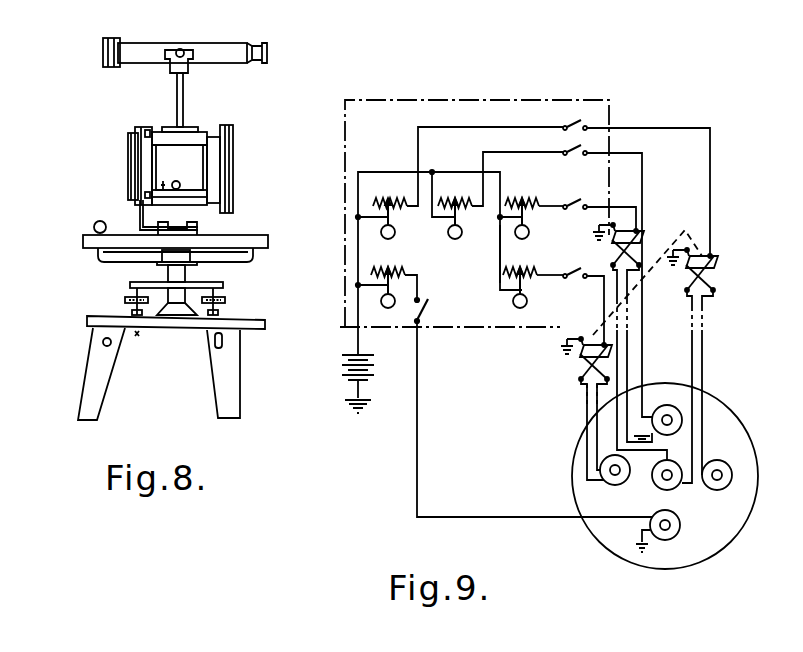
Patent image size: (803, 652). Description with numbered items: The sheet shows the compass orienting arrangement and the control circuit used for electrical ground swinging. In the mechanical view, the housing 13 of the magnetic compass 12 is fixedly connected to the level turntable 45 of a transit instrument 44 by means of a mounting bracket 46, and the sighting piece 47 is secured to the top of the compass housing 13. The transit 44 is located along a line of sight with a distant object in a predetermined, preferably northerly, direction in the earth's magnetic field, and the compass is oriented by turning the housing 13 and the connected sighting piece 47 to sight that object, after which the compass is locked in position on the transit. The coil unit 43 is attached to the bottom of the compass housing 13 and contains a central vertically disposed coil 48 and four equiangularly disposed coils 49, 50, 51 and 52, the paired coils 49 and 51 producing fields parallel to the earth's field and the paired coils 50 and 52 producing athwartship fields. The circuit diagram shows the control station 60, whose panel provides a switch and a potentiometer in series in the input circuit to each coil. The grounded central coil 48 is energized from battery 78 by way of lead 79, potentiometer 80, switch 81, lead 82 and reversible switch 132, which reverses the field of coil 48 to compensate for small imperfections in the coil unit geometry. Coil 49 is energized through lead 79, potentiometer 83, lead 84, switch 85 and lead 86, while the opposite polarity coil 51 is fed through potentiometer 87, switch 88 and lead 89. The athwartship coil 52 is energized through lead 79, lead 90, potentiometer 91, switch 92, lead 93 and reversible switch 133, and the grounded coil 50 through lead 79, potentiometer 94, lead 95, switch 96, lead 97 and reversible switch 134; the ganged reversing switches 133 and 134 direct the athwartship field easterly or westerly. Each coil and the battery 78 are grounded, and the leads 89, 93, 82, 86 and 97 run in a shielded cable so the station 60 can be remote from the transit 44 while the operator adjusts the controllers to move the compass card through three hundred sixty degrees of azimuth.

In FIG. 8, the magnetic compass 12 is at (122, 170).
In FIG. 8, the compass instrument housing 13 is at (186, 140).
In FIG. 8, the coil unit 43 is at (196, 203).
In FIG. 9, the coil unit 43 is at (622, 561).
In FIG. 8, the transit instrument 44 is at (82, 356).
In FIG. 8, the level turntable 45 is at (252, 235).
In FIG. 8, the mounting bracket 46 is at (136, 218).
In FIG. 8, the sighting piece 47 is at (149, 49).
In FIG. 9, the central coil 48 is at (673, 488).
In FIG. 9, the north-south directed coil 49 is at (667, 404).
In FIG. 9, the grounded coil 50 is at (712, 458).
In FIG. 9, the opposite polarity coil 51 is at (675, 535).
In FIG. 9, the athwartship located coil 52 is at (615, 485).
In FIG. 9, the control station 60 is at (472, 100).
In FIG. 9, the battery 78 is at (331, 384).
In FIG. 9, the lead 79 is at (362, 164).
In FIG. 9, the potentiometer 80 is at (525, 195).
In FIG. 9, the switch 81 is at (582, 202).
In FIG. 9, the lead 82 is at (618, 208).
In FIG. 9, the potentiometer 83 is at (458, 189).
In FIG. 9, the lead 84 is at (519, 153).
In FIG. 9, the switch 85 is at (580, 152).
In FIG. 9, the lead 86 is at (649, 198).
In FIG. 9, the potentiometer 87 is at (392, 263).
In FIG. 9, the switch 88 is at (428, 312).
In FIG. 9, the lead 89 is at (417, 410).
In FIG. 9, the lead 90 is at (500, 253).
In FIG. 9, the potentiometer 91 is at (518, 268).
In FIG. 9, the switch 92 is at (573, 267).
In FIG. 9, the lead 93 is at (607, 297).
In FIG. 9, the potentiometer 94 is at (386, 190).
In FIG. 9, the lead 95 is at (485, 126).
In FIG. 9, the switch 96 is at (580, 115).
In FIG. 9, the lead 97 is at (711, 196).
In FIG. 9, the reversible switch 132 is at (653, 225).
In FIG. 9, the ganged reversing switch 133 is at (575, 367).
In FIG. 9, the ganged reversing switch 134 is at (742, 276).